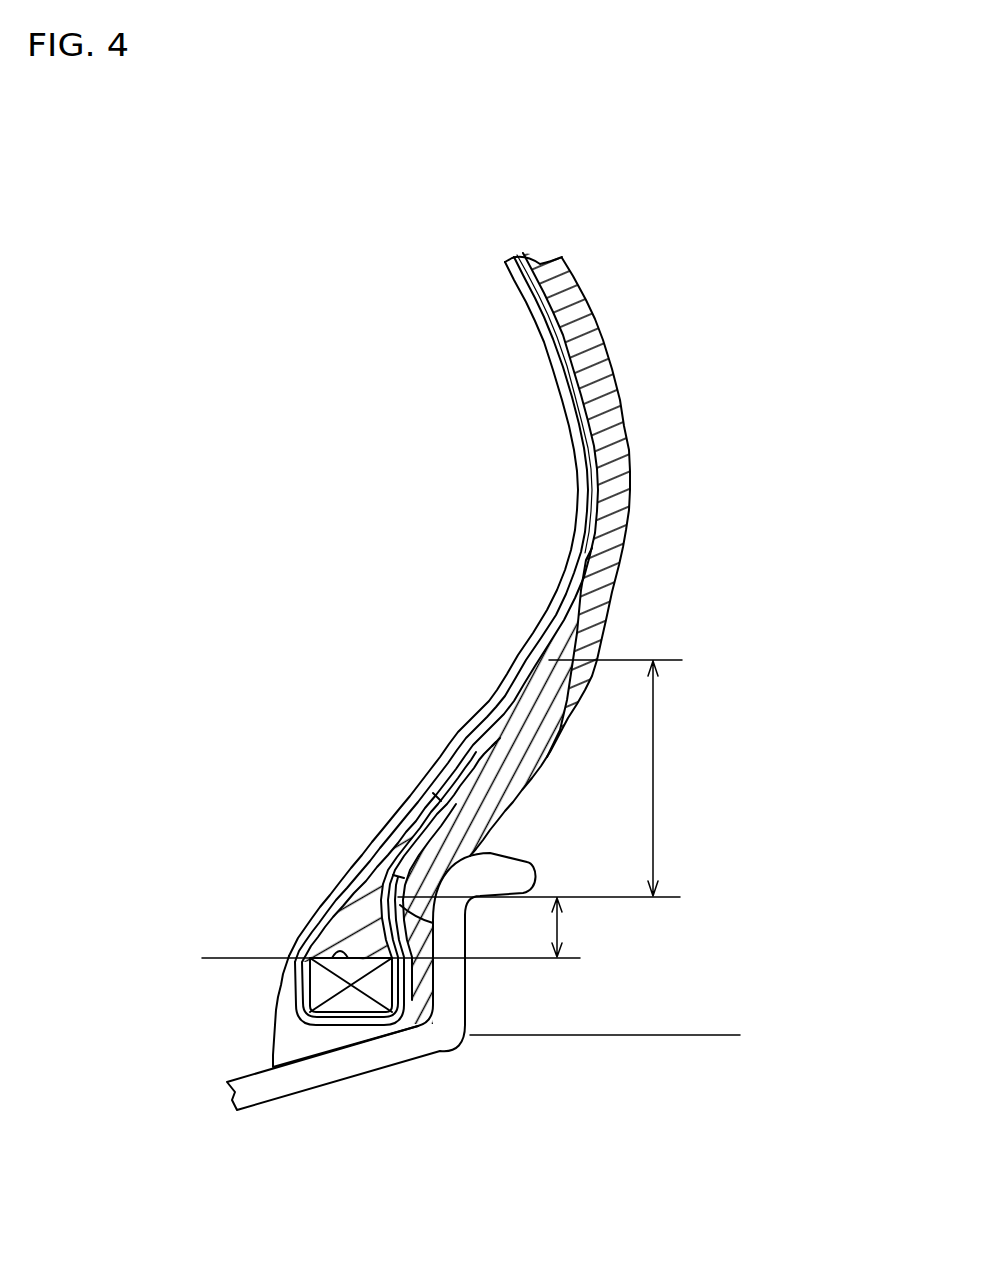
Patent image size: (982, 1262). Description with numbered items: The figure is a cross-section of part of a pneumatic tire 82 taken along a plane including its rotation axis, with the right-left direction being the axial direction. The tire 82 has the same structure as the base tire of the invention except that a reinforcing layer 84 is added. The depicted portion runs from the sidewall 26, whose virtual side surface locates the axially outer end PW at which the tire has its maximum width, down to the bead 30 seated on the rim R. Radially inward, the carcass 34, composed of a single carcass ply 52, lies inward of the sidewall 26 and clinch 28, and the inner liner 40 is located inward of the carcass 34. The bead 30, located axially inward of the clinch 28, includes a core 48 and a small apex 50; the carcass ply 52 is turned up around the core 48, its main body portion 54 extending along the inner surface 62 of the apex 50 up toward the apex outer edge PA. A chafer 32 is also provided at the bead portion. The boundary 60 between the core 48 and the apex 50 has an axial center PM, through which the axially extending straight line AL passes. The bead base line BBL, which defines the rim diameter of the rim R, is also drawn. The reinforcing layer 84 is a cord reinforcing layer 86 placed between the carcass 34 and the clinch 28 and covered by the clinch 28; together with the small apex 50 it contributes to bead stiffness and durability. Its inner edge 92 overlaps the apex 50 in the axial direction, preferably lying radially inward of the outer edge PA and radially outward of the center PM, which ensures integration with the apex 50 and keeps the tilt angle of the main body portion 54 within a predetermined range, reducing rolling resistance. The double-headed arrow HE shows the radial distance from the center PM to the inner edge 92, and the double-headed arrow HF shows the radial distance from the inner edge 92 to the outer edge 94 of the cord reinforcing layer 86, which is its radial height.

The pneumatic tire 82 is at (719, 196).
The sidewall 26 is at (617, 453).
The axially outer end PW is at (629, 490).
The inner liner 40 is at (567, 475).
The carcass 34 is at (572, 539).
The outer edge of the cord reinforcing layer 94 is at (578, 635).
The clinch 28 is at (485, 813).
The outer edge of the apex PA is at (385, 862).
The main body portion 54 is at (420, 803).
The carcass ply 52 is at (437, 797).
The apex 50 is at (312, 900).
The reinforcing layer 84 is at (482, 740).
The cord reinforcing layer 86 is at (496, 742).
The inner surface of the apex 62 is at (367, 848).
The bead 30 is at (294, 940).
The boundary between the core and the apex 60 is at (368, 1017).
The core 48 is at (315, 985).
The chafer 32 is at (275, 1043).
The center of the boundary PM is at (338, 958).
The inner edge of the cord reinforcing layer 92 is at (433, 923).
The rim R is at (451, 1053).
The straight line AL is at (235, 958).
The distance HE is at (539, 927).
The distance HF is at (621, 778).
The bead base line BBL is at (662, 1037).